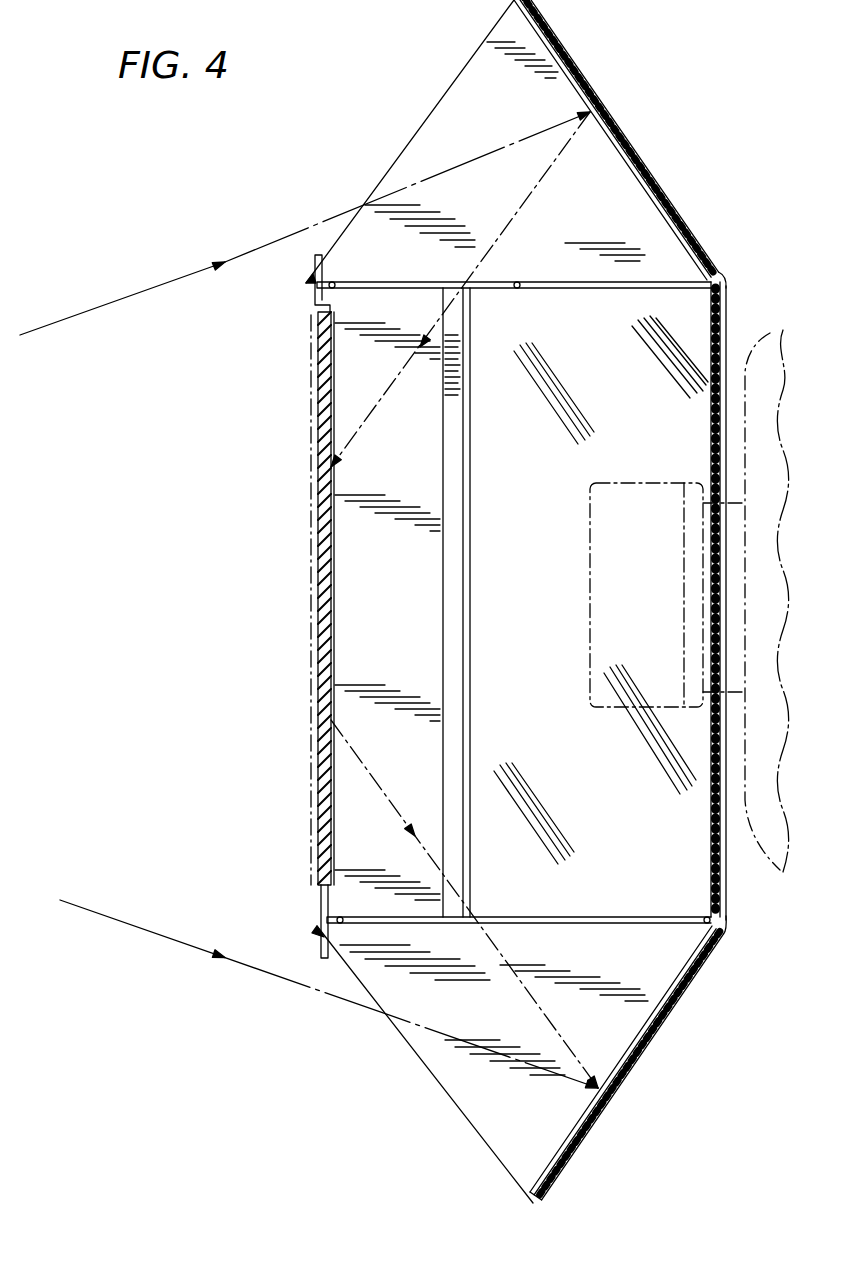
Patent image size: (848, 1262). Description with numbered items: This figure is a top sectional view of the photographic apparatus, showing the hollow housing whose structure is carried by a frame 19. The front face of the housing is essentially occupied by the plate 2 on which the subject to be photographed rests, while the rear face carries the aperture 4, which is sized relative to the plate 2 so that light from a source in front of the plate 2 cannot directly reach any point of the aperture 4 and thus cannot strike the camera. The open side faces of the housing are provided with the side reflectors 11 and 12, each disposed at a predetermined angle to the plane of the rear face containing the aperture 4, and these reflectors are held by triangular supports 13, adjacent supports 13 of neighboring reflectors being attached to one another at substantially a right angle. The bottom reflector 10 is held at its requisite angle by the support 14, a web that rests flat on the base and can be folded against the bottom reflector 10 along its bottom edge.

The plate 2 is at (318, 410).
The aperture 4 is at (718, 320).
The bottom reflector 10 is at (540, 619).
The side reflector 11 is at (663, 200).
The side reflector 12 is at (628, 1082).
The triangular support 13 is at (470, 218).
The support 14 is at (402, 619).
The frame 19 is at (322, 905).